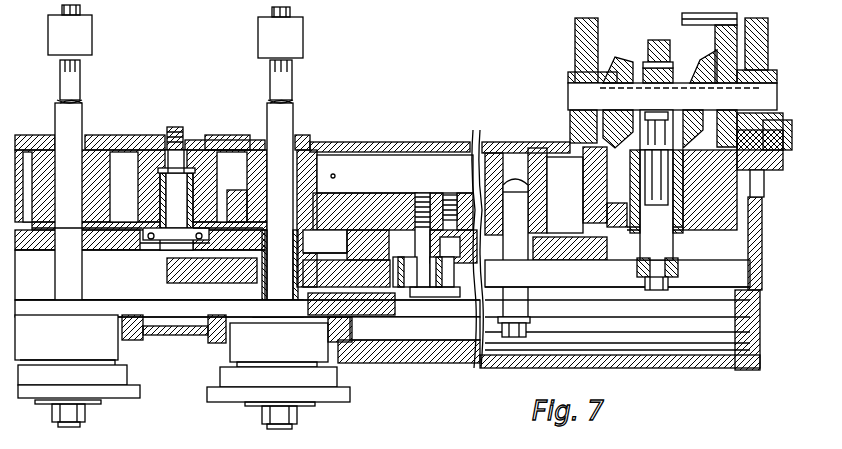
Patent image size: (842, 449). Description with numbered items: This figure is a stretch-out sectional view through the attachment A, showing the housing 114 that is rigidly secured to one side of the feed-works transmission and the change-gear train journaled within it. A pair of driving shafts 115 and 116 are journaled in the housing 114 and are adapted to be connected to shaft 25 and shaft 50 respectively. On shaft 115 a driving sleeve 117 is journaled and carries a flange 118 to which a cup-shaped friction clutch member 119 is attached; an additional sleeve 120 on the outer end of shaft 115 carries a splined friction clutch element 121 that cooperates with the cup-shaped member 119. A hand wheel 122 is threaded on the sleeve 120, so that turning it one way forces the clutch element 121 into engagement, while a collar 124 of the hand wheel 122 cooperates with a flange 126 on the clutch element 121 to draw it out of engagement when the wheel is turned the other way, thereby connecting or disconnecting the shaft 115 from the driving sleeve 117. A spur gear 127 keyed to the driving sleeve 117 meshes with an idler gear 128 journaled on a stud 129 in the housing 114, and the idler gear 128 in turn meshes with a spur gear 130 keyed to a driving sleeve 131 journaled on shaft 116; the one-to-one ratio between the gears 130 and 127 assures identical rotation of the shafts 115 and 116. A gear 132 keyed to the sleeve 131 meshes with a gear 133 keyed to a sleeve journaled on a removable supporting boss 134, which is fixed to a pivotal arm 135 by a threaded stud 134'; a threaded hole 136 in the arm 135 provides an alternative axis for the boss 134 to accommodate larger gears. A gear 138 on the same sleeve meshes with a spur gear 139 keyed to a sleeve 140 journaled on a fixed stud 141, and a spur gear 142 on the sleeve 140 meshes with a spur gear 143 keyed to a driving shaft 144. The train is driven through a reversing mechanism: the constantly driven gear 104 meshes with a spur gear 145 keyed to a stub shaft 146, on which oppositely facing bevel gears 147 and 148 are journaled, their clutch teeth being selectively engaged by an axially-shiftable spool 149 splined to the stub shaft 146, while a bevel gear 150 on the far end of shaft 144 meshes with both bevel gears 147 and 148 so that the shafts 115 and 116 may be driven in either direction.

The cylinder 25 is at (82, 6).
The shaft 50 is at (292, 8).
The gear 104 is at (680, 27).
The housing 114 is at (205, 136).
The driving shaft 115 is at (76, 116).
The driving shaft 116 is at (287, 119).
The driving sleeve 117 is at (113, 271).
The flange 118 is at (100, 308).
The cup-shaped friction clutch member 119 is at (126, 348).
The sleeve 120 is at (92, 408).
The friction clutch element 121 is at (109, 359).
The hand wheel 122 is at (143, 393).
The collar 124 is at (117, 378).
The flange 126 is at (680, 84).
The spur gear 127 is at (118, 228).
The idler gear 128 is at (143, 252).
The stud 129 is at (170, 192).
The spur gear 130 is at (348, 240).
The driving sleeve 131 is at (267, 282).
The gear 132 is at (224, 290).
The gear 133 is at (447, 285).
The removable supporting boss 134 is at (418, 246).
The threaded stud 134' is at (415, 223).
The arm 135 is at (372, 198).
The threaded hole 136 is at (452, 196).
The gear 138 is at (308, 320).
The spur gear 139 is at (536, 312).
The sleeve 140 is at (545, 287).
The fixed stud 141 is at (528, 198).
The spur gear 142 is at (595, 262).
The spur gear 143 is at (690, 240).
The driving shaft 144 is at (675, 268).
The spur gear 145 is at (718, 45).
The stub shaft 146 is at (565, 100).
The bevel gear 147 is at (625, 55).
The bevel gear 148 is at (695, 70).
The axially-shiftable spool 149 is at (650, 88).
The bevel gear 150 is at (671, 121).